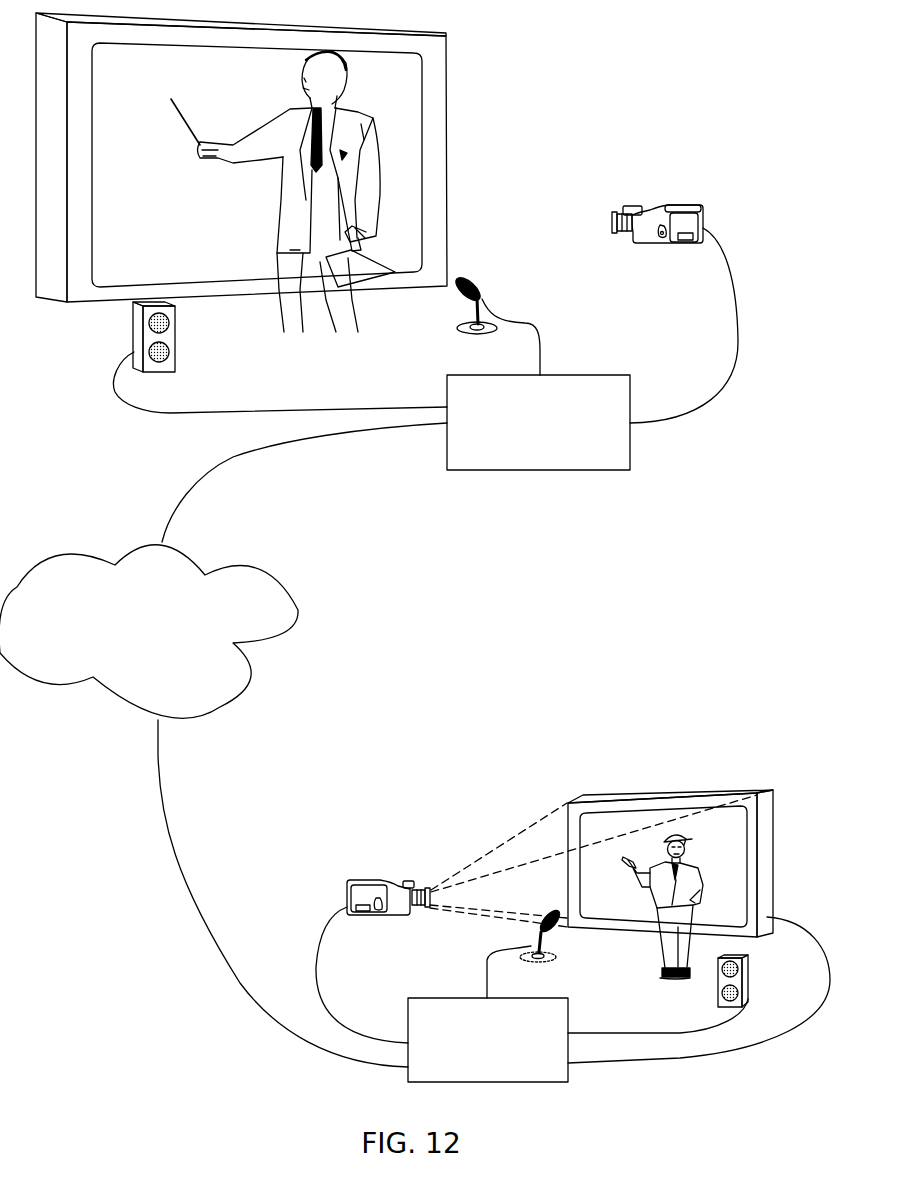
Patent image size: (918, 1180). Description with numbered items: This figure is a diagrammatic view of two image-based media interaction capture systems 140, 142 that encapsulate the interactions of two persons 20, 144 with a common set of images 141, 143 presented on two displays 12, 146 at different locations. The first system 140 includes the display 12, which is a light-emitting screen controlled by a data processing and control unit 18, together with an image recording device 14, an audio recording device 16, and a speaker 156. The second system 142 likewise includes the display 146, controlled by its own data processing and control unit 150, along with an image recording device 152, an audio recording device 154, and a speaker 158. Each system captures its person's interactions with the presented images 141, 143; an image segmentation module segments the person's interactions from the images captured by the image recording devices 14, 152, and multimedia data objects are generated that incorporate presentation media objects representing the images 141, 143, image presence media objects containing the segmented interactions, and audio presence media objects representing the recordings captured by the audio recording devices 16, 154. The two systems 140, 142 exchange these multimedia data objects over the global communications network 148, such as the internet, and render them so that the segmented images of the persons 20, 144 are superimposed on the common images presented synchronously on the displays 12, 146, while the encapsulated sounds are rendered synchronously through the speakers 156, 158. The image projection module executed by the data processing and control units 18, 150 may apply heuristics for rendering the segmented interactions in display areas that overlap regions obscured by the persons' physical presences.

The display 12 is at (83, 303).
The images 141 is at (171, 257).
The person 20 is at (355, 109).
The data processing and control unit 18 is at (395, 283).
The speaker 156 is at (178, 340).
The image-based media interaction capture system 140 is at (541, 70).
The image recording device 14 is at (694, 211).
The audio recording device 16 is at (484, 291).
The global communications network 148 is at (299, 608).
The image-based media interaction capture system 142 is at (414, 815).
The image recording device 152 is at (348, 882).
The data processing and control unit 150 is at (425, 998).
The display 146 is at (648, 800).
The images 143 is at (631, 912).
The person 144 is at (686, 848).
The audio recording device 154 is at (548, 959).
The speaker 158 is at (749, 969).